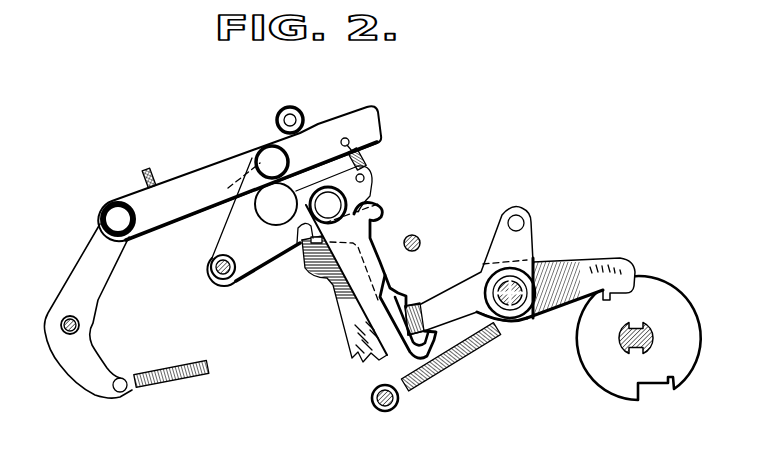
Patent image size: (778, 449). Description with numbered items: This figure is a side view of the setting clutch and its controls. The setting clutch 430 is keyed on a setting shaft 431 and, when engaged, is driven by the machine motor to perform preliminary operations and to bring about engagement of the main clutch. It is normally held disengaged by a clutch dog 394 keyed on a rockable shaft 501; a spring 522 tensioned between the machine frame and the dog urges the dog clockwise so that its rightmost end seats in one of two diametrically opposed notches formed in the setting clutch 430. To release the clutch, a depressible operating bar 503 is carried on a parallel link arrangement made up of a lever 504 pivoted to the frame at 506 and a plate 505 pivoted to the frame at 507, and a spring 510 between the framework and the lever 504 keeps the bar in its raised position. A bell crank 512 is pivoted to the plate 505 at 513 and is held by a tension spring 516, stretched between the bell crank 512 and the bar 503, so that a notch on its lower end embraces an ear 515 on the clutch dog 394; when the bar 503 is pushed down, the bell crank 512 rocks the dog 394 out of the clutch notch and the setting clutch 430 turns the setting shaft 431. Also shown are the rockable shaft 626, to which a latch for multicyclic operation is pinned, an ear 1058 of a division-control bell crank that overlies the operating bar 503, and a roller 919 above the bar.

The clutch dog 394 is at (573, 262).
The setting clutch 430 is at (583, 353).
The setting shaft 431 is at (627, 340).
The rockable shaft 501 is at (509, 305).
The operating bar 503 is at (222, 161).
The lever 504 is at (80, 356).
The plate 505 is at (222, 230).
The pivot 506 is at (80, 325).
The pivot 507 is at (210, 274).
The spring 510 is at (172, 363).
The bell crank 512 is at (424, 187).
The pivot 513 is at (330, 205).
The ear 515 is at (411, 310).
The tension spring 516 is at (364, 162).
The spring 522 is at (437, 372).
The rockable shaft 626 is at (428, 234).
The ring 919 is at (299, 110).
The ear 1058 is at (151, 168).